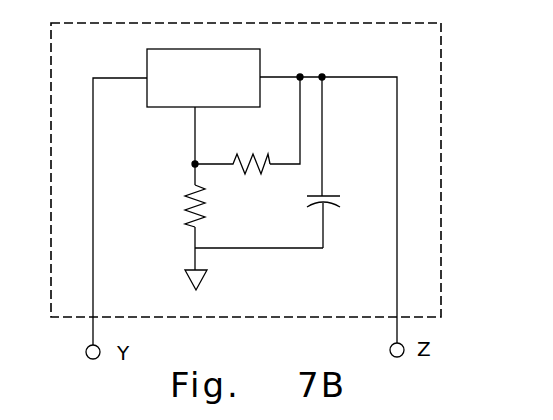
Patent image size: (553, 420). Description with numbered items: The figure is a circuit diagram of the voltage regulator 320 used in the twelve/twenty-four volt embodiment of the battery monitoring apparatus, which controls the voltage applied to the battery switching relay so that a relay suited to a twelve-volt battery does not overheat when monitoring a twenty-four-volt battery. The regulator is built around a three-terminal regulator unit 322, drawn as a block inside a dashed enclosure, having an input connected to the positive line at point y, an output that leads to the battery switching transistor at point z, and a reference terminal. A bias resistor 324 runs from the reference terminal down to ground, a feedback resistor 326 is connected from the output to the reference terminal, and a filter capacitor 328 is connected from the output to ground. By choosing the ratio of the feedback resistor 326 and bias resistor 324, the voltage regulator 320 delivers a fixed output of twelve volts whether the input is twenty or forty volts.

The voltage regulator 320 is at (441, 62).
The three-terminal regulator unit 322 is at (165, 50).
The bias resistor 324 is at (193, 223).
The feedback resistor 326 is at (240, 173).
The filter capacitor 328 is at (330, 204).